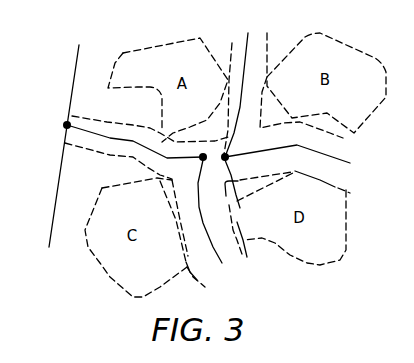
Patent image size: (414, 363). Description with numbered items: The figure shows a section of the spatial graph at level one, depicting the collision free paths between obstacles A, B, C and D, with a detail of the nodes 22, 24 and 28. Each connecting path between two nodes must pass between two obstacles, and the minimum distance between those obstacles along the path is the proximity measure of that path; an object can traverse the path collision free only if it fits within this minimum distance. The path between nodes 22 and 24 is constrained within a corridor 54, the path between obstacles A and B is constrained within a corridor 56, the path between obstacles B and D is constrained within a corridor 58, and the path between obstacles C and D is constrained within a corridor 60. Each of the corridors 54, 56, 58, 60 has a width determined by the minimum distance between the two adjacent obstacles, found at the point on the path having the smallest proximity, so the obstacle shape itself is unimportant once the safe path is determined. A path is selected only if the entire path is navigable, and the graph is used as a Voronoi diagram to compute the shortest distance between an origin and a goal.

The node 22 is at (61, 119).
The node 24 is at (202, 154).
The node 28 is at (238, 198).
The corridor 54 is at (116, 124).
The corridor 56 is at (268, 38).
The corridor 58 is at (345, 135).
The corridor 60 is at (197, 281).